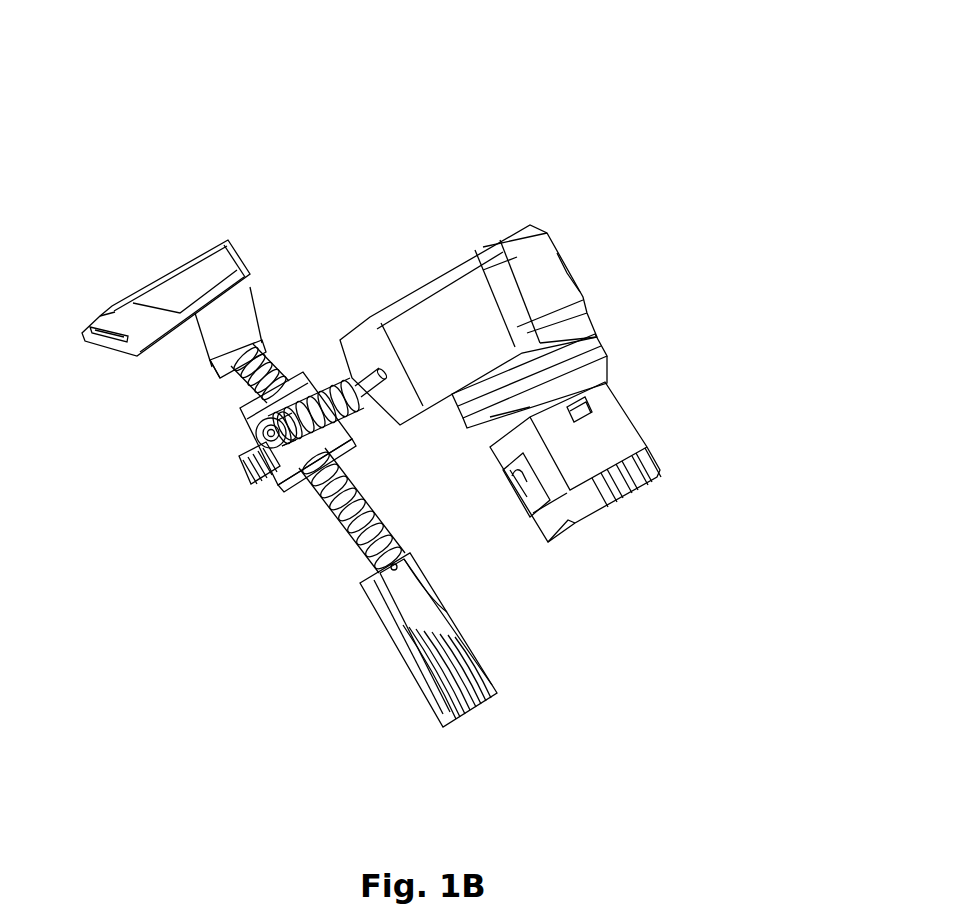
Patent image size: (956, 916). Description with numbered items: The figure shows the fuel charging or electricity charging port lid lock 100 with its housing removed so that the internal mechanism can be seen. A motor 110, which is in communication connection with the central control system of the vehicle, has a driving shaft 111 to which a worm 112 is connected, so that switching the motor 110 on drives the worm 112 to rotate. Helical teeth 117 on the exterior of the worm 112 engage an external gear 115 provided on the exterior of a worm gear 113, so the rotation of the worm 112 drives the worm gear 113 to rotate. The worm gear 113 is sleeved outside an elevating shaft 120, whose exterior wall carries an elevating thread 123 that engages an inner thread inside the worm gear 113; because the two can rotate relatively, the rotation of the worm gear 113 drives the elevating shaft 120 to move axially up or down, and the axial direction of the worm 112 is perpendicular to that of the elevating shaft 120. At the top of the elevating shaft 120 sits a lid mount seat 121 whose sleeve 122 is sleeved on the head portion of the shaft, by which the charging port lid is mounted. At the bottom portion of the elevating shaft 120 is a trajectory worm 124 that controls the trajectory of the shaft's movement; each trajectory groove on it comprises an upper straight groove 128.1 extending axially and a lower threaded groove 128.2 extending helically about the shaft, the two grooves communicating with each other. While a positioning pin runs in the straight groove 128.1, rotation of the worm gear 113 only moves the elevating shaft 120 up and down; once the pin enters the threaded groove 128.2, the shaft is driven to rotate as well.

The fuel charging or electricity charging port lid lock 100 is at (365, 102).
The motor 110 is at (441, 304).
The driving shaft 111 is at (372, 380).
The worm 112 is at (334, 380).
The worm gear 113 is at (241, 419).
The external gear 115 is at (241, 474).
The helical teeth 117 is at (297, 392).
The elevating shaft 120 is at (284, 534).
The lid mount seat 121 is at (187, 277).
The sleeve 122 is at (256, 327).
The elevating thread 123 is at (347, 563).
The trajectory worm 124 is at (380, 610).
The straight groove 128.1 is at (430, 573).
The threaded groove 128.2 is at (474, 662).